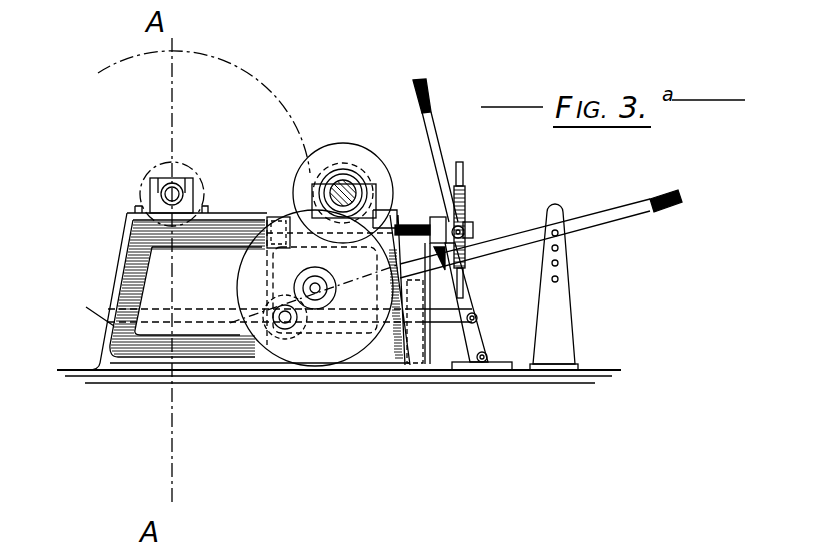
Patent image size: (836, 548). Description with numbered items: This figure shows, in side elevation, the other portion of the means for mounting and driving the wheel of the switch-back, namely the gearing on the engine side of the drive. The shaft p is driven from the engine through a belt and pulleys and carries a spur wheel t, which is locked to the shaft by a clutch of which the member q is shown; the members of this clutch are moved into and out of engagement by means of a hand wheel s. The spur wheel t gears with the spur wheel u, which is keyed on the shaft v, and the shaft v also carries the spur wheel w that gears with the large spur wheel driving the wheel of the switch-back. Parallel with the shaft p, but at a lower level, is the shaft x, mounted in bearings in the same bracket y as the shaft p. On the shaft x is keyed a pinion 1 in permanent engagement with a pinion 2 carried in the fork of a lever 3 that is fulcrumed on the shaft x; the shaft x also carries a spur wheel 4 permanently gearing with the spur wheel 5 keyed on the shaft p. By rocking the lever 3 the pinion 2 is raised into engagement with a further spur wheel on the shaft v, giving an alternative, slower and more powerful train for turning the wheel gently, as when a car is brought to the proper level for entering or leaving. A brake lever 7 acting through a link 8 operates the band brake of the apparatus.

The pinion 1 is at (333, 295).
The pinion 2 is at (290, 336).
The lever 3 is at (517, 233).
The spur wheel 4 is at (370, 360).
The spur wheel 5 is at (344, 178).
The brake lever 7 is at (432, 127).
The link 8 is at (217, 309).
The hand wheel s is at (468, 205).
The spur wheel t is at (366, 182).
The shaft p is at (357, 190).
The clutch member q is at (387, 193).
The spur wheel u is at (288, 113).
The shaft v is at (178, 190).
The spur wheel w is at (203, 188).
The shaft x is at (317, 305).
The bracket y is at (205, 363).